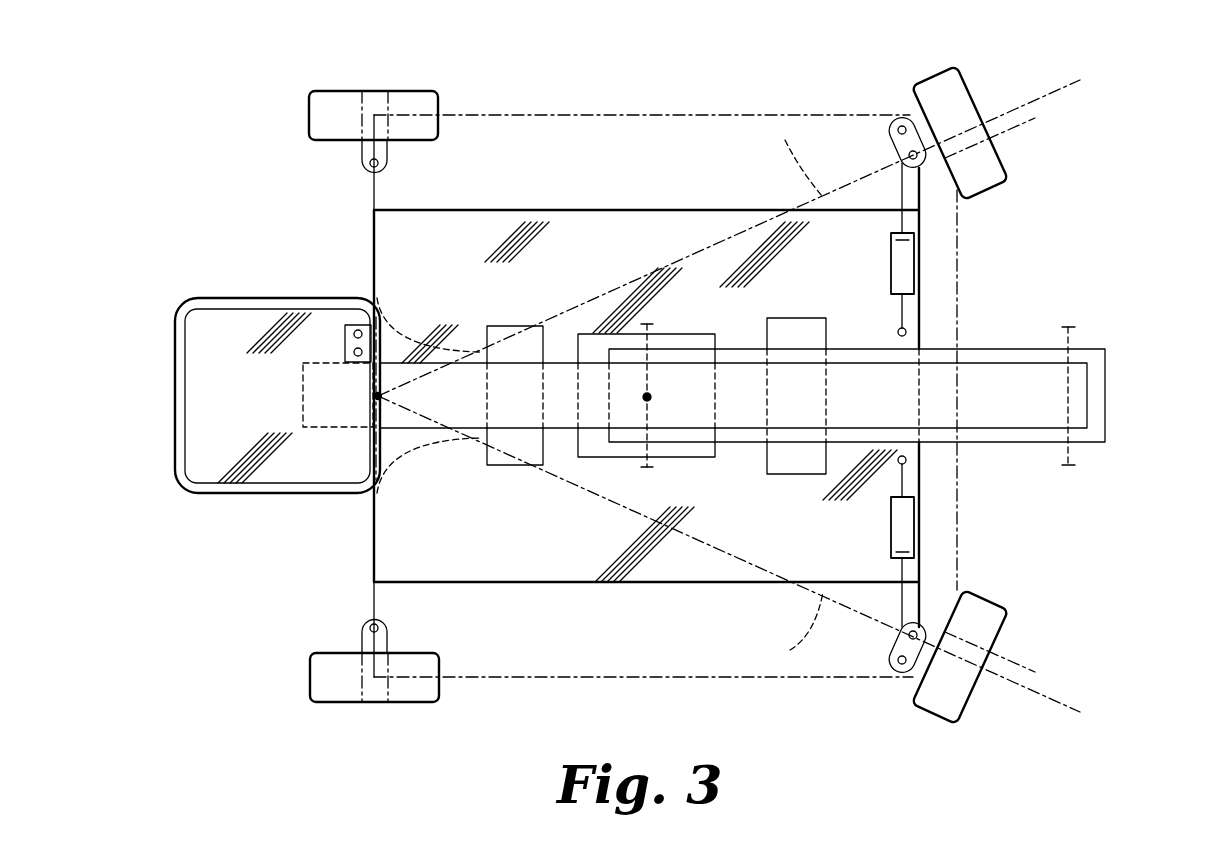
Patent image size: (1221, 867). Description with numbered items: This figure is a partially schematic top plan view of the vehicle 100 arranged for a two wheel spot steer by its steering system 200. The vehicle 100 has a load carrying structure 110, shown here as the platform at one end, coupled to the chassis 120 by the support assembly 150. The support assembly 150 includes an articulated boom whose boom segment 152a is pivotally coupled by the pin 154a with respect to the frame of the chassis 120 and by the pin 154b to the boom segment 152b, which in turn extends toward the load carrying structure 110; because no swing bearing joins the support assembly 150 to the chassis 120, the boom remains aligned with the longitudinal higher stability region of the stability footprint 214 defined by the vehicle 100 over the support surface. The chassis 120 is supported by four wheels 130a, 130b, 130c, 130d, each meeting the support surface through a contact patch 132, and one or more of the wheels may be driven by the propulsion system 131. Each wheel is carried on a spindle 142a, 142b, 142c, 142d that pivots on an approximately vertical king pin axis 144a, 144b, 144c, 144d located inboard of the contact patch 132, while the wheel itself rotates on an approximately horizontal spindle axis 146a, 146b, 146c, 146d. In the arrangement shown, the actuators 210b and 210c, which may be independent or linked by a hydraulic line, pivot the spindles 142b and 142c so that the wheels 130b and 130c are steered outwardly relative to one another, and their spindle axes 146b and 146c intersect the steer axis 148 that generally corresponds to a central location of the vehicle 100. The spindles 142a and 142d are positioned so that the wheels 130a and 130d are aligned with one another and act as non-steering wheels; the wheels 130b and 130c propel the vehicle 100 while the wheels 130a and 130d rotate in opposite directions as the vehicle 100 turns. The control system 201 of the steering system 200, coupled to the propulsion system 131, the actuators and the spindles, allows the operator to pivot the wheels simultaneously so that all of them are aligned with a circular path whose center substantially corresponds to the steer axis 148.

The vehicle 100 is at (1112, 55).
The load carrying structure 110 is at (172, 394).
The chassis 120 is at (670, 586).
The wheel 130a is at (412, 703).
The wheel 130b is at (930, 718).
The wheel 130c is at (934, 74).
The wheel 130d is at (412, 90).
The propulsion system 131 is at (762, 456).
The contact patch 132 is at (390, 125).
The spindle 142a is at (362, 630).
The spindle 142b is at (937, 628).
The spindle 142c is at (995, 194).
The spindle 142d is at (362, 165).
The king pin axis 144a is at (368, 641).
The king pin axis 144b is at (935, 655).
The king pin axis 144c is at (927, 122).
The king pin axis 144d is at (370, 160).
The spindle axis 146a is at (370, 470).
The spindle axis 146b is at (784, 625).
The spindle axis 146c is at (778, 165).
The spindle axis 146d is at (370, 318).
The steer axis 148 is at (376, 397).
The support assembly 150 is at (743, 344).
The boom segment 152a is at (967, 347).
The boom segment 152b is at (1020, 364).
The pin 154a is at (645, 447).
The pin 154b is at (1068, 397).
The steering system 200 is at (515, 323).
The control system 201 is at (342, 343).
The actuator 210b is at (920, 527).
The actuator 210c is at (920, 269).
The stability footprint 214 is at (656, 679).